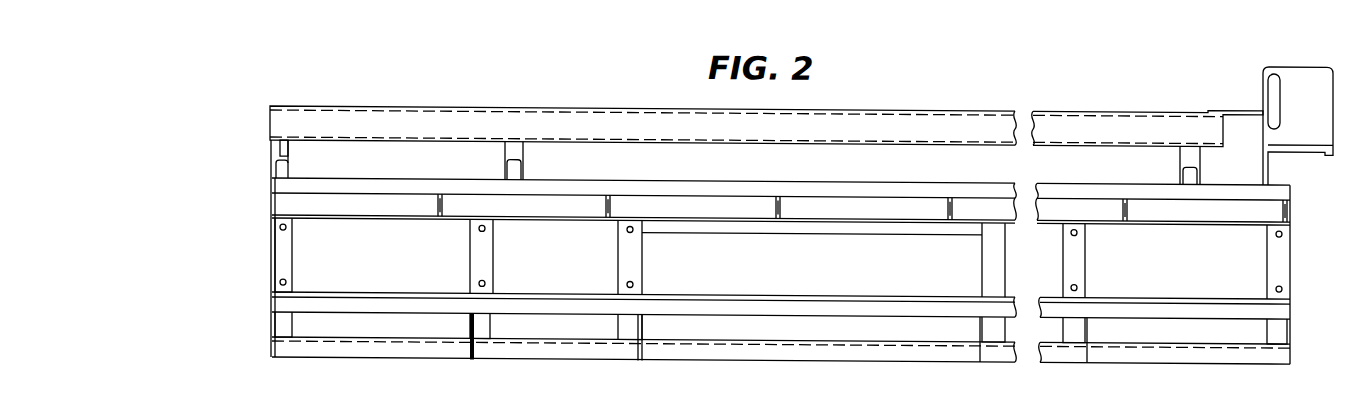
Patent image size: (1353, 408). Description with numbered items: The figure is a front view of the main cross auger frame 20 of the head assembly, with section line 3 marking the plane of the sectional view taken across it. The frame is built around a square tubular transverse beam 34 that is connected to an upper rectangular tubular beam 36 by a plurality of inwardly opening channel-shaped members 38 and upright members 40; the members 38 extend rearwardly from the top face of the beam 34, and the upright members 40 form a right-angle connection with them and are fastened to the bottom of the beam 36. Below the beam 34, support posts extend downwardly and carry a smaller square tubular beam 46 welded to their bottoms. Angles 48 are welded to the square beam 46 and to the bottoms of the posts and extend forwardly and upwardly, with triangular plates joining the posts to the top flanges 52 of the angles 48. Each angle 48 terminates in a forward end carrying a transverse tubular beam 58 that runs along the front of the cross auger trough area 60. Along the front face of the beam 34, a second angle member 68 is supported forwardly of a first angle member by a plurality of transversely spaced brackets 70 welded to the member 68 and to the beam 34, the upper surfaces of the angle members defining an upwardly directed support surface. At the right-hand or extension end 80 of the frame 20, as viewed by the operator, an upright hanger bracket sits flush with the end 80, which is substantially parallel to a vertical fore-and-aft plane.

The section line 3- 3 is at (245, 65).
The main cross auger frame 20 is at (1147, 80).
The square tubular transverse beam 34 is at (385, 216).
The upper rectangular tubular beam 36 is at (461, 108).
The inwardly opening channel-shaped member 38 is at (287, 163).
The upright member 40 is at (290, 142).
The square tubular beam 46 is at (416, 358).
The angle 48 is at (270, 330).
The top flange of angle 52 is at (275, 326).
The transverse tubular beam 58 is at (733, 300).
The cross auger trough area 60 is at (838, 246).
The second angle member 68 is at (708, 182).
The bracket 70 is at (442, 216).
The extension end 80 is at (253, 162).